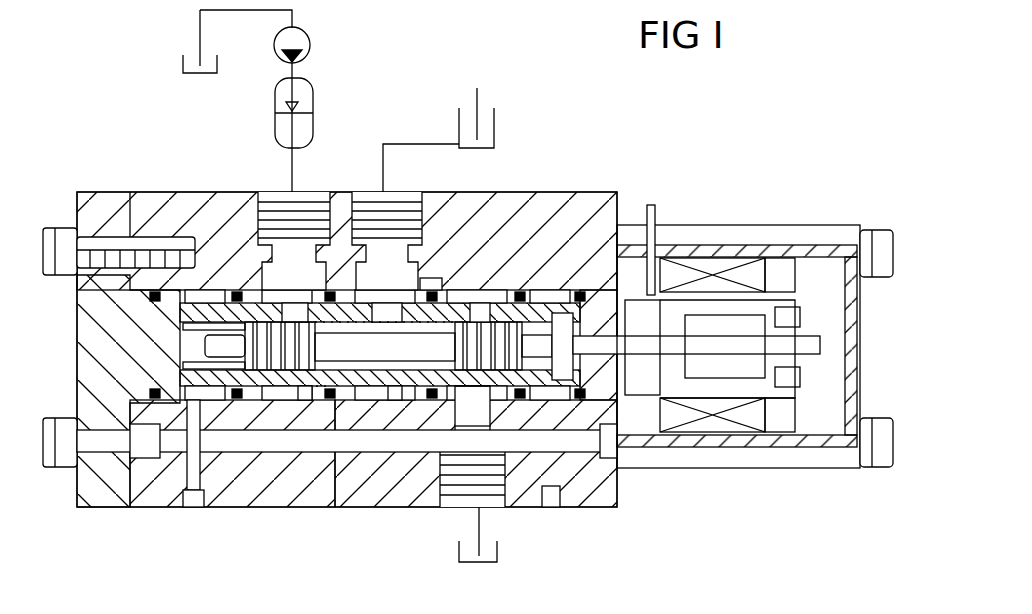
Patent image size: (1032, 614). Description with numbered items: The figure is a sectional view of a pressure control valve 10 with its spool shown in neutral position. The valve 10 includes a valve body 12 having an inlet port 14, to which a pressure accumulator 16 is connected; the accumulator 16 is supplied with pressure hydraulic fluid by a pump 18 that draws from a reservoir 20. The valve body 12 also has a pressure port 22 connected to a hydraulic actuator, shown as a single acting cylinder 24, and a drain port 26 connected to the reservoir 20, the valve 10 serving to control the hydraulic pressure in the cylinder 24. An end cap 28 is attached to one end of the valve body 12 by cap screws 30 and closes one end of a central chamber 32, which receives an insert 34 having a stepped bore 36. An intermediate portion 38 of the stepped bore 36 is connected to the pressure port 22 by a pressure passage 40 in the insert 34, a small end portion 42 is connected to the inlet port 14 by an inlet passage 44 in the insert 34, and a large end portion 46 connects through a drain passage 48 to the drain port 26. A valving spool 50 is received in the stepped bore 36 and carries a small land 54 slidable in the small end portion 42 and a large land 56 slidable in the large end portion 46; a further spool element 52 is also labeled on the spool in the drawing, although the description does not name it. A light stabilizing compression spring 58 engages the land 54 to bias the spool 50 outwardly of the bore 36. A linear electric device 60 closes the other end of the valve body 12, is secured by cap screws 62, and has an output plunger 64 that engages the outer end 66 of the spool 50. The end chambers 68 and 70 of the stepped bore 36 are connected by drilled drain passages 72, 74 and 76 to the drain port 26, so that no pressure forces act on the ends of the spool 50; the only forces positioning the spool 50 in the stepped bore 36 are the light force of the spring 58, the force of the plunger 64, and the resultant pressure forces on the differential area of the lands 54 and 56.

The pressure control valve 10 is at (708, 166).
The valve body 12 is at (511, 200).
The inlet port 14 is at (262, 205).
The pressure accumulator 16 is at (275, 93).
The pump 18 is at (312, 40).
The reservoir 20 is at (183, 67).
The pressure port 22 is at (371, 200).
The single acting cylinder 24 is at (494, 120).
The drain port 26 is at (500, 500).
The end cap 28 is at (77, 320).
The cap screws 30 is at (62, 228).
The central chamber 32 is at (560, 310).
The insert 34 is at (218, 303).
The stepped bore 36 is at (334, 372).
The intermediate portion 38 is at (428, 303).
The pressure passage 40 is at (393, 290).
The small end portion 42 is at (335, 322).
The inlet passage 44 is at (302, 322).
The large end portion 46 is at (500, 303).
The drain passage 48 is at (455, 475).
The valving spool 50 is at (352, 400).
The passage 52 is at (305, 386).
The small land 54 is at (252, 400).
The large land 56 is at (530, 330).
The stabilizing compression spring 58 is at (190, 330).
The linear electric device 60 is at (756, 228).
The cap screws 62 is at (872, 418).
The output plunger 64 is at (745, 340).
The outer end 66 is at (617, 205).
The end chamber 68 is at (553, 356).
The end chamber 70 is at (170, 300).
The drilled drain passage 72 is at (395, 440).
The drilled drain passage 74 is at (170, 506).
The drilled drain passage 76 is at (585, 500).